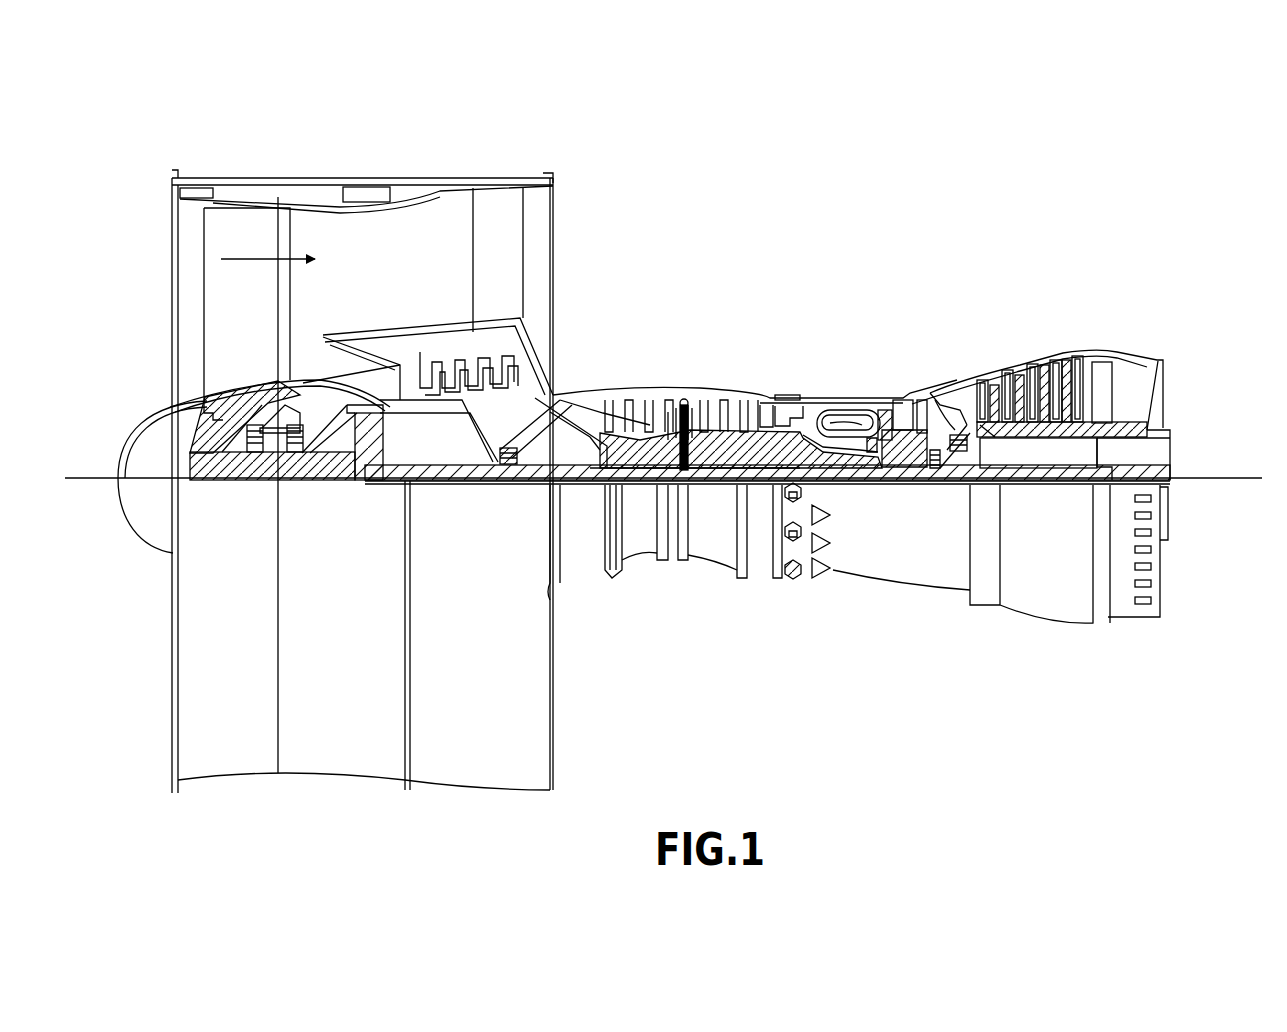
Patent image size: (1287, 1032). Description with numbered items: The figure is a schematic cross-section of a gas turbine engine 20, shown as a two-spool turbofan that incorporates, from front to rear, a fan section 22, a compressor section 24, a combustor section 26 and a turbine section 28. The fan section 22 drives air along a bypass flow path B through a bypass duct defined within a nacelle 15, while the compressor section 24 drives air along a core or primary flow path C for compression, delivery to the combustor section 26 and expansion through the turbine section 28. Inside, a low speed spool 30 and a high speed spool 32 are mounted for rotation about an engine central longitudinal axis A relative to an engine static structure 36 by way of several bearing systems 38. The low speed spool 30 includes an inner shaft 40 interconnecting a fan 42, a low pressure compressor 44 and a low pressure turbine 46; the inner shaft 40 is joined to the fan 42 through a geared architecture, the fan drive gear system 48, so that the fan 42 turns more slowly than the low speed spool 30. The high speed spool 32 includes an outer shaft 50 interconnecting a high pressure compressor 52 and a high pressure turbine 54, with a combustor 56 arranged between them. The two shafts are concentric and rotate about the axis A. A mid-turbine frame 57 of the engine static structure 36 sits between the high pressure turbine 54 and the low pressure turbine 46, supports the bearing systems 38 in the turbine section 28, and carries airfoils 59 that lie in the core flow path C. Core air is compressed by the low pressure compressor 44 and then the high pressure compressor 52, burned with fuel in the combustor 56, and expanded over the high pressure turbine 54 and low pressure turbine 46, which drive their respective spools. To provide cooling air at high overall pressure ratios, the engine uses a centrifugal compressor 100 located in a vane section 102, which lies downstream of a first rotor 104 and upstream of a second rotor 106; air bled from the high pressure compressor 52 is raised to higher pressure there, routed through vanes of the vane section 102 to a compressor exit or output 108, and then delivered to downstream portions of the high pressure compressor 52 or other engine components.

The nacelle 15 is at (362, 190).
The gas turbine engine 20 is at (866, 196).
The fan section 22 is at (283, 160).
The compressor section 24 is at (603, 373).
The combustor section 26 is at (833, 360).
The turbine section 28 is at (990, 330).
The low speed spool 30 is at (717, 486).
The high speed spool 32 is at (770, 412).
The engine static structure 36 is at (762, 552).
The bearing systems 38 is at (512, 470).
The inner shaft 40 is at (573, 486).
The fan 42 is at (247, 314).
The low pressure compressor 44 is at (490, 378).
The low pressure turbine 46 is at (1035, 368).
The fan drive gear system 48 is at (372, 464).
The outer shaft 50 is at (835, 470).
The high pressure compressor 52 is at (708, 400).
The high pressure turbine 54 is at (896, 402).
The combustor 56 is at (858, 422).
The mid-turbine frame 57 is at (952, 380).
The airfoils 59 is at (985, 423).
The centrifugal compressor 100 is at (675, 380).
The vane section 102 is at (678, 413).
The first rotor 104 is at (660, 420).
The second rotor 106 is at (697, 406).
The compressor exit or output 108 is at (690, 398).
The engine central longitudinal axis A is at (1213, 476).
The bypass flow path B is at (254, 259).
The core or primary flow path C is at (343, 358).